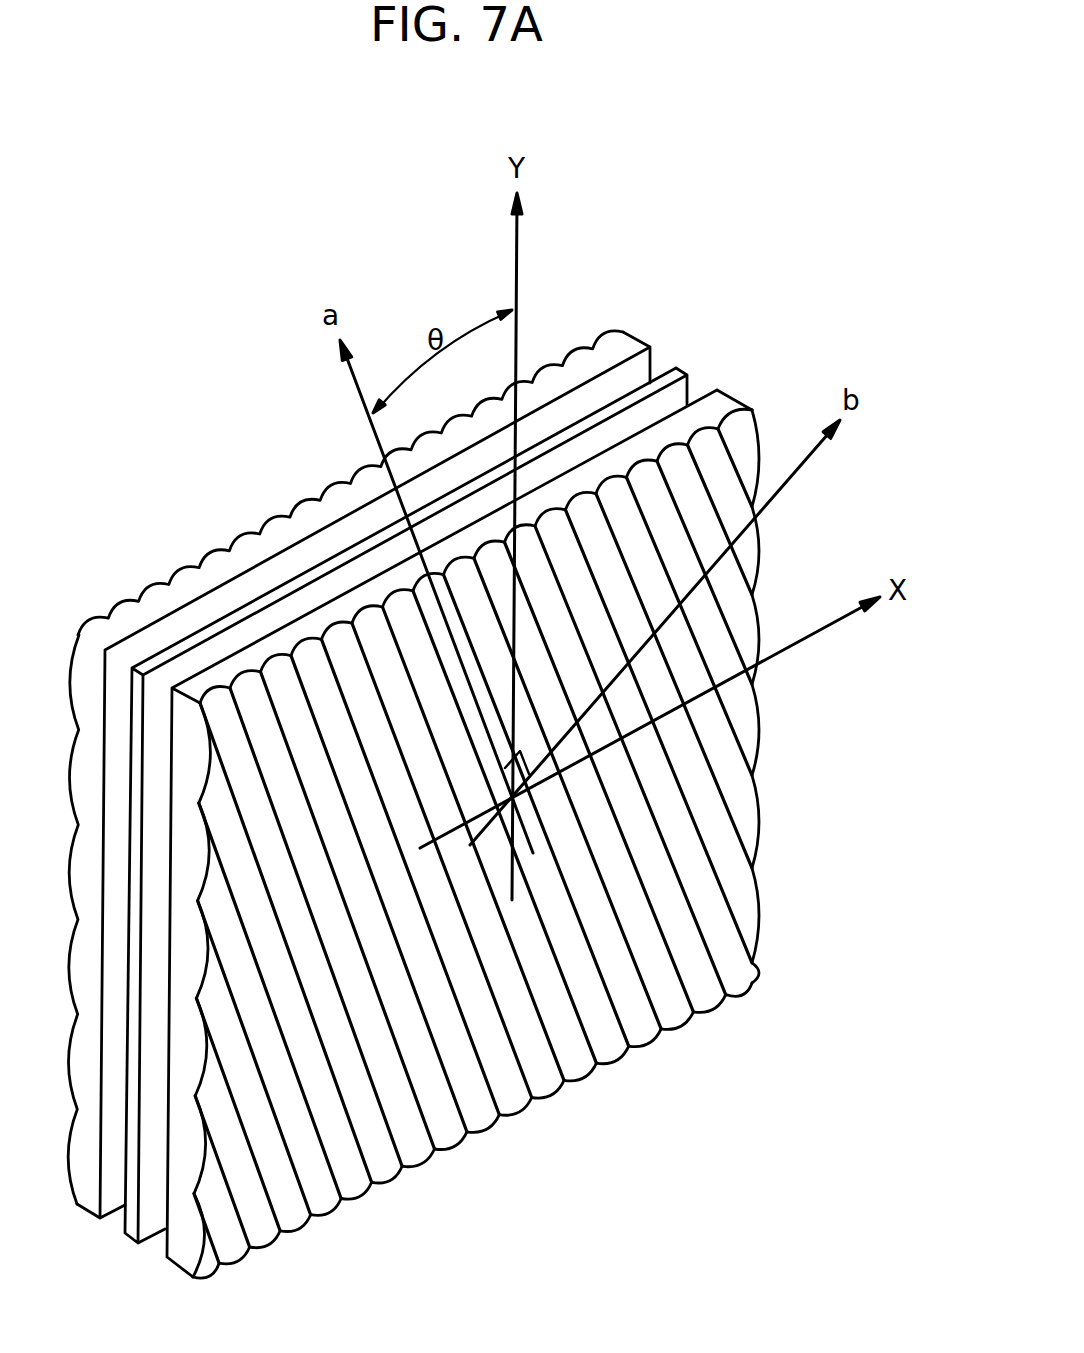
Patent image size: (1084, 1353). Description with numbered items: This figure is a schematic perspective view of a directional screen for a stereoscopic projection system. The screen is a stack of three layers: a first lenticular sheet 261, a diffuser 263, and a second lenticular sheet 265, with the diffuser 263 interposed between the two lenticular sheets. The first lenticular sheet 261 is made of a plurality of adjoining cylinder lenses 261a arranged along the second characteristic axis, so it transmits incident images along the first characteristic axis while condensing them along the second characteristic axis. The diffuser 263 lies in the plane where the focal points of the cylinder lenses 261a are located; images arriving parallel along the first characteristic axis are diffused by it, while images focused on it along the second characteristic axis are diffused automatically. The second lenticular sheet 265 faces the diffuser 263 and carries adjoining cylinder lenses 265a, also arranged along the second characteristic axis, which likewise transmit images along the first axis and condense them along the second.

The first lenticular sheet 261 is at (627, 352).
The cylinder lenses 261a is at (580, 357).
The diffuser 263 is at (677, 370).
The second lenticular sheet 265 is at (717, 407).
The cylinder lenses 265a is at (740, 593).